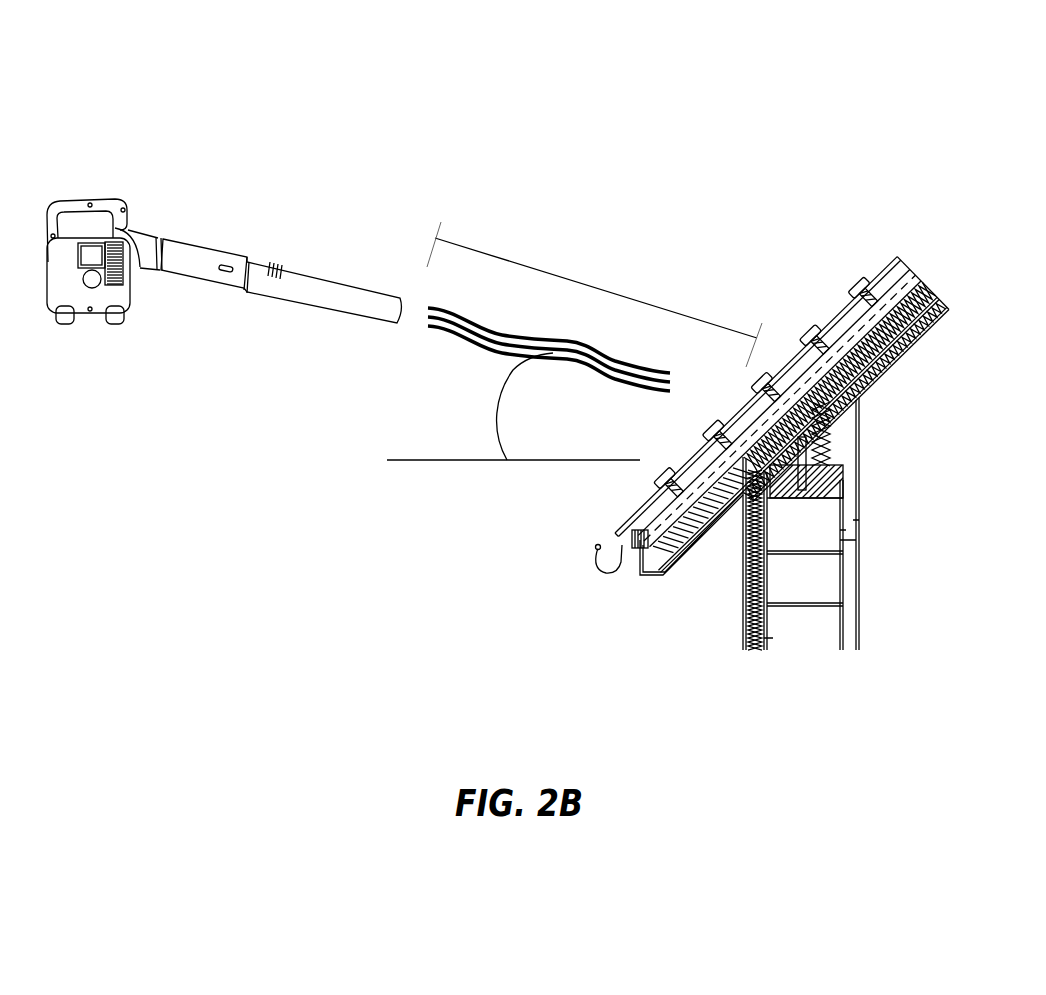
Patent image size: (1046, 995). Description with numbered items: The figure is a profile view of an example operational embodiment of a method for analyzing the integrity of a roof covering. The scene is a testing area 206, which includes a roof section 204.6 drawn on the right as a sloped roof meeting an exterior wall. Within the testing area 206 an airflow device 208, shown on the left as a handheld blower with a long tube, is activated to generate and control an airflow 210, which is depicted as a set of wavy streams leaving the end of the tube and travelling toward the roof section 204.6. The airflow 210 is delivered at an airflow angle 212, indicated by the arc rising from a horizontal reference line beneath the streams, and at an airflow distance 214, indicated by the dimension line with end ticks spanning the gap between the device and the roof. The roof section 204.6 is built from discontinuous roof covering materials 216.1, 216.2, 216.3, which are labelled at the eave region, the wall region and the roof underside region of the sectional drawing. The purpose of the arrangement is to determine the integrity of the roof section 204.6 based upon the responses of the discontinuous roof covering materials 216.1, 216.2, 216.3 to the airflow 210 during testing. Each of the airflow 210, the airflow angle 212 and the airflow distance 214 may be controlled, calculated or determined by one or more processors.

The testing area 206 is at (481, 38).
The airflow device 208 is at (143, 242).
The airflow 210 is at (513, 352).
The airflow angle 212 is at (497, 408).
The airflow distance 214 is at (613, 292).
The roof section 204.6 is at (782, 348).
The discontinuous roof covering material 216.1 is at (695, 495).
The discontinuous roof covering material 216.2 is at (822, 430).
The discontinuous roof covering material 216.3 is at (858, 403).